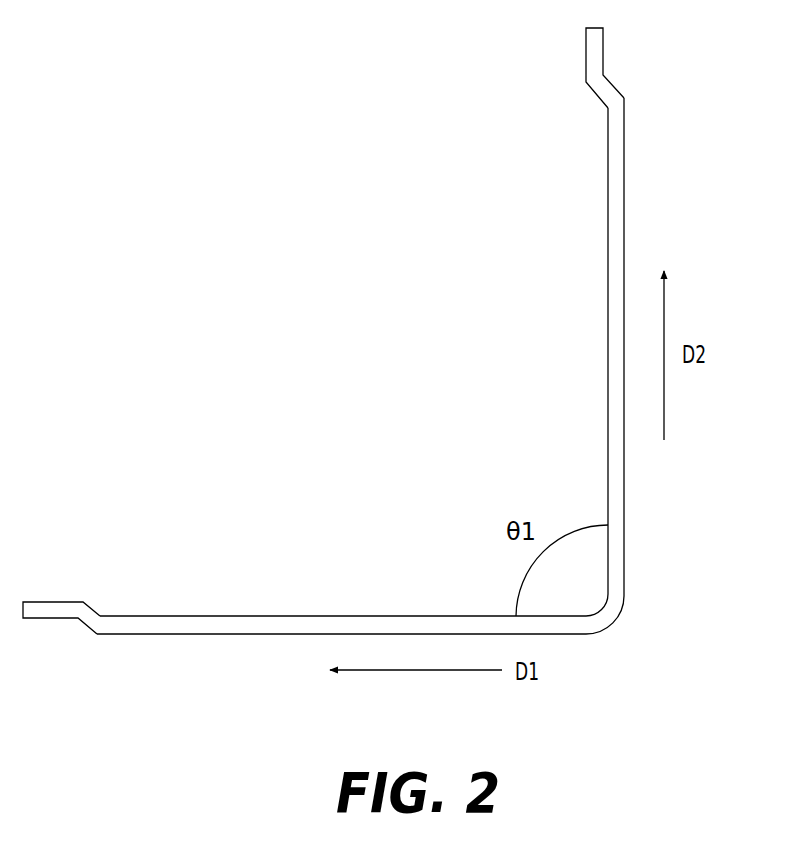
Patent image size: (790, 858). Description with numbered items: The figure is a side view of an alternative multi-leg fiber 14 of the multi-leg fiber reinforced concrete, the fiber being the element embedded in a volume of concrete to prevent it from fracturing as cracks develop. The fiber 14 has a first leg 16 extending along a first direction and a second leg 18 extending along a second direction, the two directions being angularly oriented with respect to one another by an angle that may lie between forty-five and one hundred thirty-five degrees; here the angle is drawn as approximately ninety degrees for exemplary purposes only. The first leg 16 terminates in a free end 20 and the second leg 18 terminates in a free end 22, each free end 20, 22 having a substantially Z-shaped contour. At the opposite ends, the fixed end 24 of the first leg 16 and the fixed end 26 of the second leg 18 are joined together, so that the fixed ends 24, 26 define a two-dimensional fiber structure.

The fiber 14 is at (418, 121).
The first leg 16 is at (200, 616).
The second leg 18 is at (624, 183).
The free end 20 is at (60, 602).
The free end 22 is at (603, 48).
The fixed end 24 is at (585, 634).
The fixed end 26 is at (624, 565).